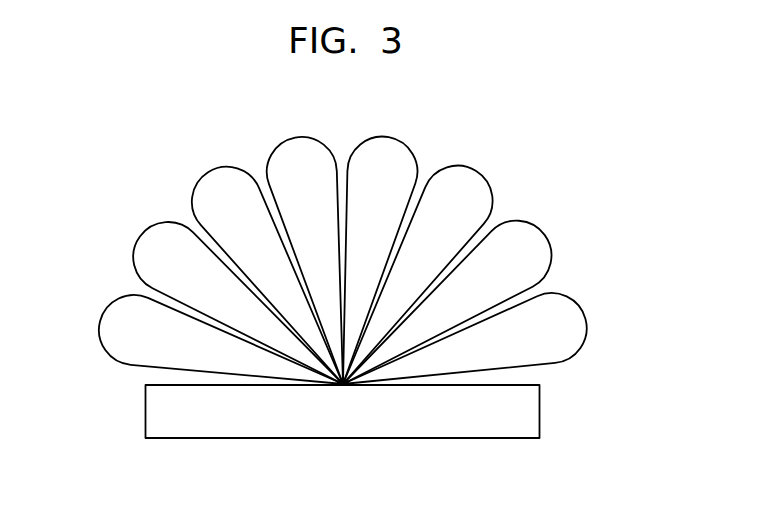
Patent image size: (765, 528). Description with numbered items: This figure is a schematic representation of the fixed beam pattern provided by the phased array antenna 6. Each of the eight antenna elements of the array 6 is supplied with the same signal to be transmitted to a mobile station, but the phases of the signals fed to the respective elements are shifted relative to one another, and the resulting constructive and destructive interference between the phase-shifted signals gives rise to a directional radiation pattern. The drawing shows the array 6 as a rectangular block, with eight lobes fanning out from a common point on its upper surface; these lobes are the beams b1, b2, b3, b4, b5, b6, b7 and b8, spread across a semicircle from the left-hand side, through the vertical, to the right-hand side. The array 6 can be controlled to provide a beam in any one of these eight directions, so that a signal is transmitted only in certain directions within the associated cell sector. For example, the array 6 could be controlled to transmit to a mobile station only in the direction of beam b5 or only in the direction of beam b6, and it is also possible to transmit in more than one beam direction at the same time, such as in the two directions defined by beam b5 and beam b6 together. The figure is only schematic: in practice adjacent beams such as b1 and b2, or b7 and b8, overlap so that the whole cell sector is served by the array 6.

The phased array antenna 6 is at (407, 428).
The beam b1 is at (123, 330).
The beam b2 is at (157, 243).
The beam b3 is at (228, 185).
The beam b4 is at (307, 160).
The beam b5 is at (398, 155).
The beam b6 is at (478, 187).
The beam b7 is at (543, 263).
The beam b8 is at (575, 337).